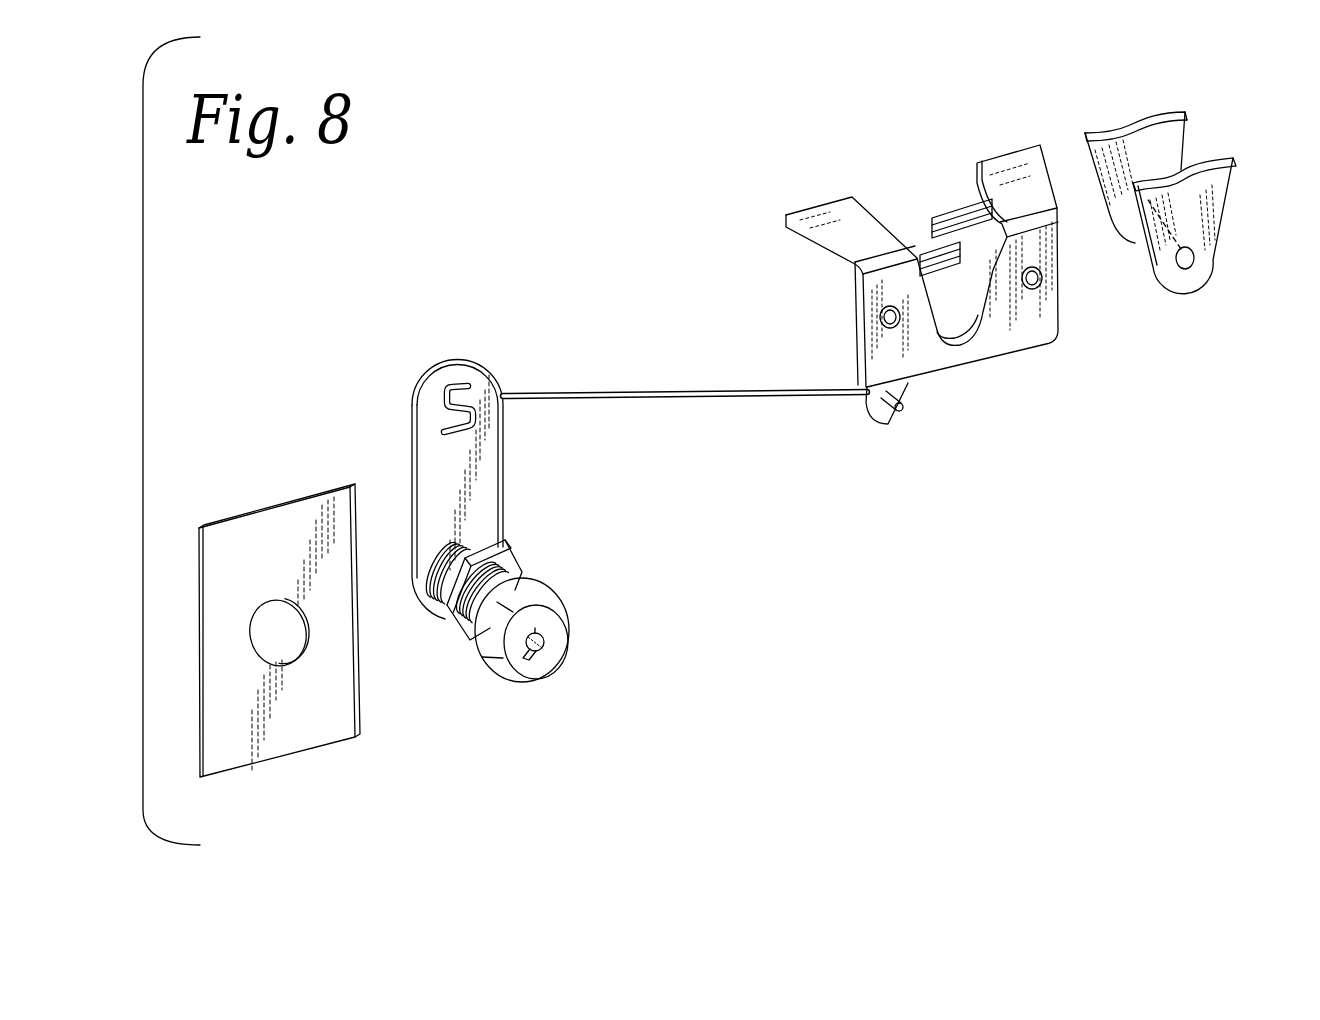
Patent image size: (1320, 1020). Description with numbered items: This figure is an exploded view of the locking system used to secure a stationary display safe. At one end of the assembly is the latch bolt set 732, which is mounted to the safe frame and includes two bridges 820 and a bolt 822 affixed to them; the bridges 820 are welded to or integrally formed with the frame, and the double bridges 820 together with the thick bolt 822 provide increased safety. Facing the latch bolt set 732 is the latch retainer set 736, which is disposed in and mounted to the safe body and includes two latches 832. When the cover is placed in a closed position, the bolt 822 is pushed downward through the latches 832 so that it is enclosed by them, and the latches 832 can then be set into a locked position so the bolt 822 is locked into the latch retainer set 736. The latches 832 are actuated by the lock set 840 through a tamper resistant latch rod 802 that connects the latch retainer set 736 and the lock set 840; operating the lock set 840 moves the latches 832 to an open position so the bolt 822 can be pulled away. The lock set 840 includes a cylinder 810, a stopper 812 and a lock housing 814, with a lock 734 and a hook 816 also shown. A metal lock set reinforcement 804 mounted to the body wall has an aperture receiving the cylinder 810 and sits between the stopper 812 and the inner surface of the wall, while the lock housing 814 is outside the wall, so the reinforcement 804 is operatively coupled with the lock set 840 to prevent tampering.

The latch bolt set 732 is at (1152, 209).
The lock 734 is at (577, 778).
The latch retainer set 736 is at (923, 318).
The latch rod 802 is at (690, 400).
The lock set reinforcement 804 is at (242, 737).
The cylinder 810 is at (468, 615).
The stopper 812 is at (505, 547).
The lock housing 814 is at (553, 598).
The hook 816 is at (467, 388).
The bridges 820 is at (1230, 157).
The bolt 822 is at (1133, 213).
The latches 832 is at (975, 215).
The lock set 840 is at (535, 563).